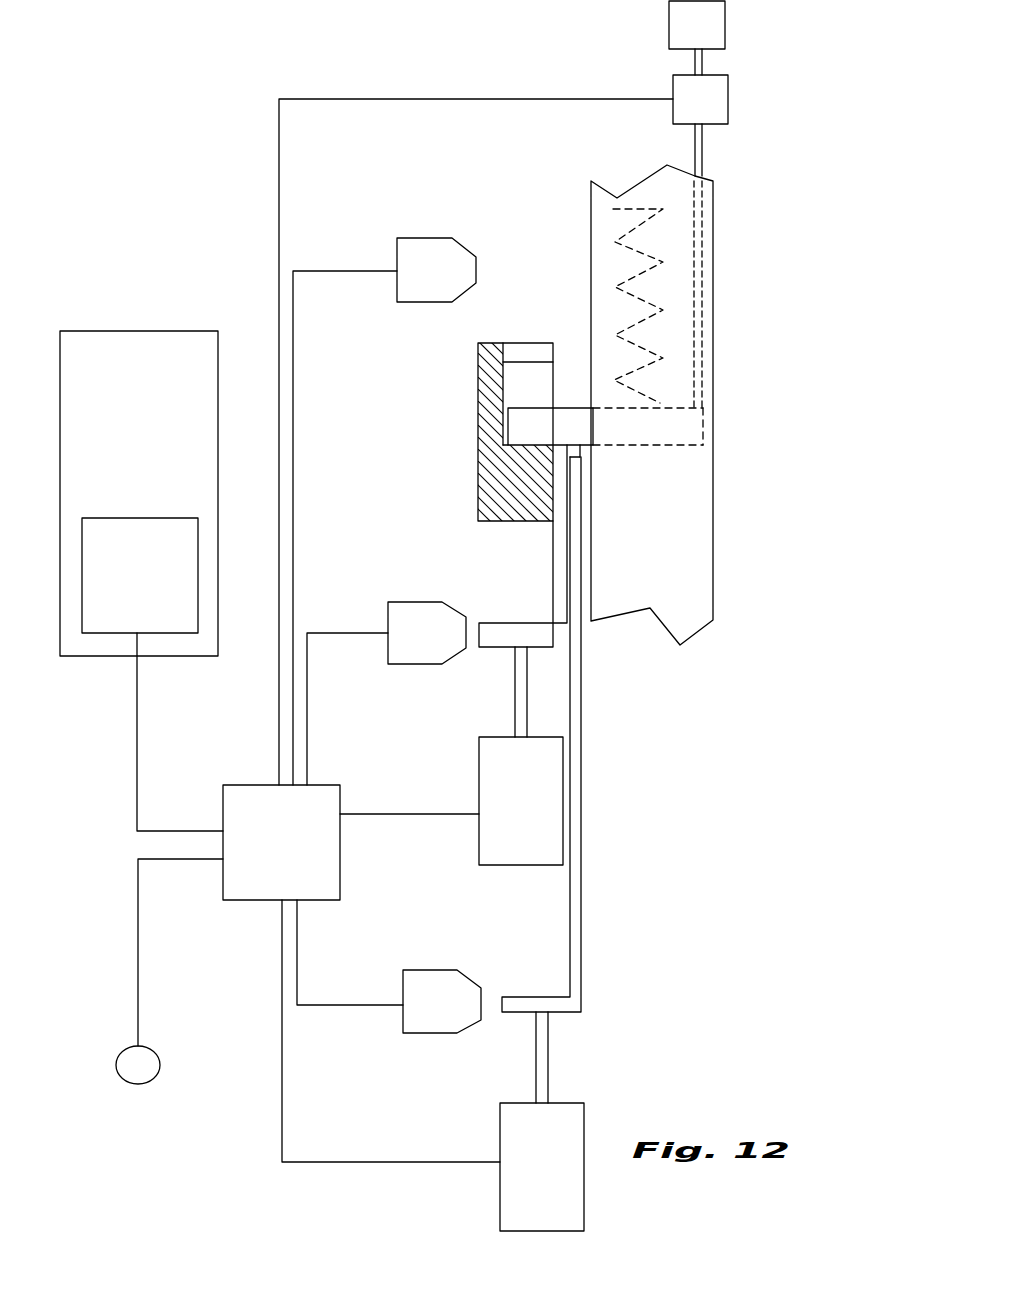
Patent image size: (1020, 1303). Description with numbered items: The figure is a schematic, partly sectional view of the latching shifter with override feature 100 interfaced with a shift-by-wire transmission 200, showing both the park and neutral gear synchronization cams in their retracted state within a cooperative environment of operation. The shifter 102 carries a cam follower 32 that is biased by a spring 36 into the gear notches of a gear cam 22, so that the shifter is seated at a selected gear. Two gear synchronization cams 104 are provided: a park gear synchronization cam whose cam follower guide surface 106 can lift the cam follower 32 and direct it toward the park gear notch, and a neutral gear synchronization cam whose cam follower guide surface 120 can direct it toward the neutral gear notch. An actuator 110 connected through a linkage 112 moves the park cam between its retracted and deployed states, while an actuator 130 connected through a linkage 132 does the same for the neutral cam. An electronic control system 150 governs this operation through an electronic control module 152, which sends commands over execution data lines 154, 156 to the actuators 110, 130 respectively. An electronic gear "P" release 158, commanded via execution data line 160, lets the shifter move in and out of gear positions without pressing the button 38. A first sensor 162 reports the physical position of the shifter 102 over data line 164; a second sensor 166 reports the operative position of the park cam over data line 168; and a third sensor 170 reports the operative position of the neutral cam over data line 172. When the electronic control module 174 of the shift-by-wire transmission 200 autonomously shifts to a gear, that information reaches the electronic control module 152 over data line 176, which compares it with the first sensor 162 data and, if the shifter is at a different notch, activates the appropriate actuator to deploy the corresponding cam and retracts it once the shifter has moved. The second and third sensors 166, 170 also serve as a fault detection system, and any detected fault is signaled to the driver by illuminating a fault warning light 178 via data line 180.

The button 38 is at (669, 22).
The electronic gear "P" release 158 is at (673, 108).
The shifter 102 is at (728, 355).
The spring 36 is at (612, 243).
The cam follower guide surface 120 is at (577, 428).
The gear cam 22 is at (462, 432).
The cam follower guide surface 106 is at (560, 445).
The cam follower 32 is at (527, 407).
The gear synchronization cam 104 is at (553, 538).
The linkage 112 is at (515, 693).
The execution data line 154 is at (479, 780).
The actuator 110 is at (479, 850).
The linkage 132 is at (536, 1072).
The actuator 130 is at (500, 1187).
The first sensor 162 is at (427, 238).
The second sensor 166 is at (443, 602).
The third sensor 170 is at (457, 970).
The execution data line 160 is at (279, 170).
The data line 164 is at (294, 530).
The data line 168 is at (308, 718).
The data line 172 is at (298, 975).
The execution data line 156 is at (282, 1012).
The electronic control module (ECM) 152 is at (256, 785).
The data line 176 is at (137, 800).
The data line 180 is at (138, 978).
The fault warning light 178 is at (153, 1080).
The electronic control system 150 is at (138, 1125).
The latching shifter with override feature 100 is at (655, 753).
The shift-by-wire transmission 200 is at (145, 331).
The electronic control module 174 is at (140, 518).